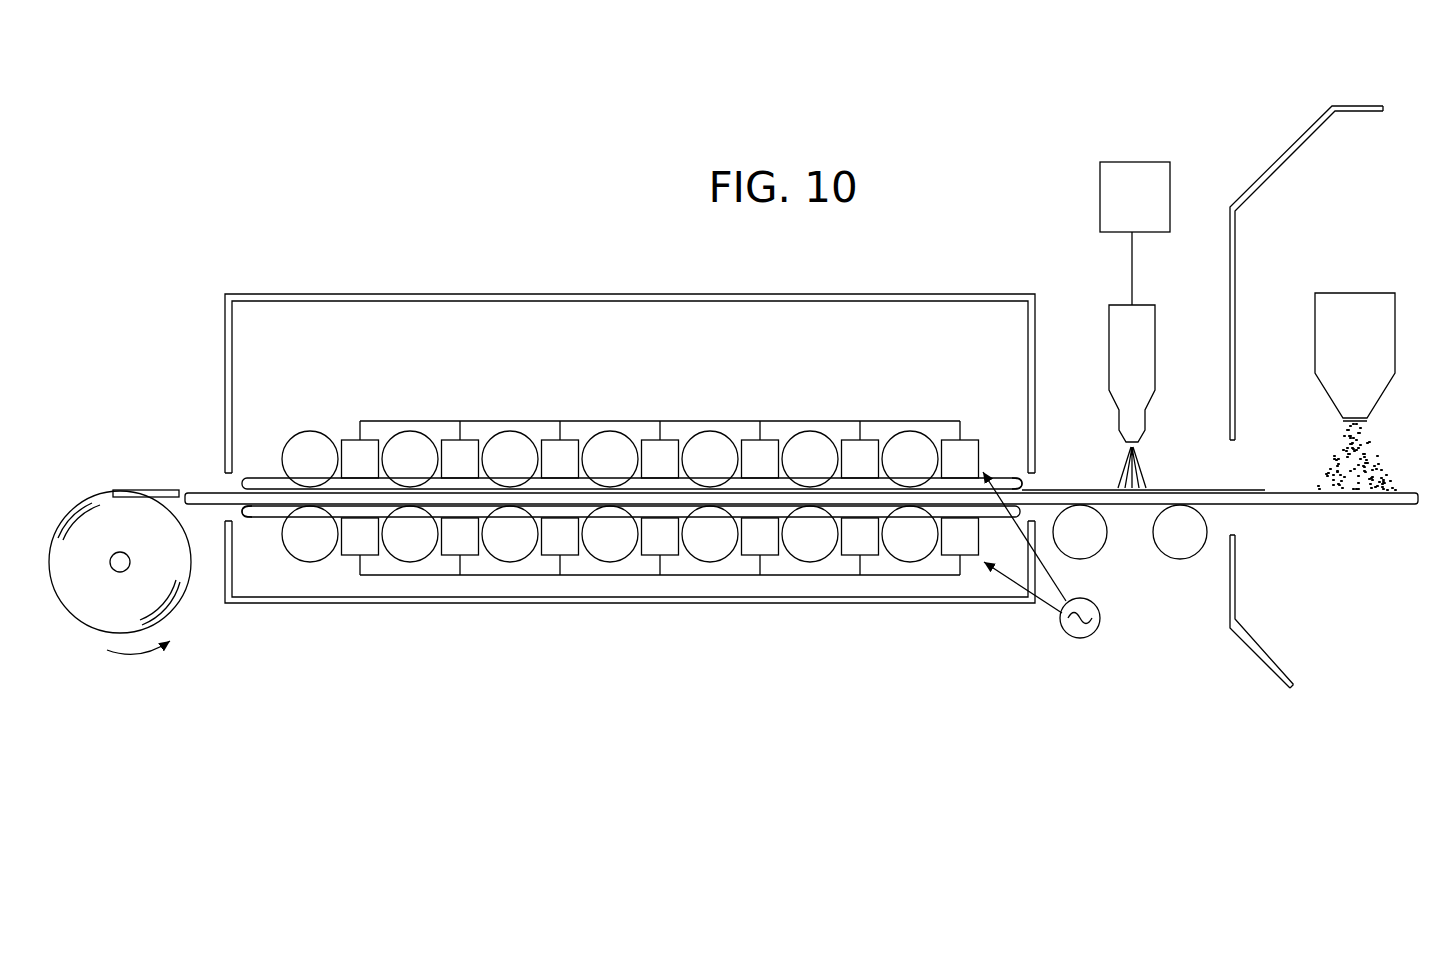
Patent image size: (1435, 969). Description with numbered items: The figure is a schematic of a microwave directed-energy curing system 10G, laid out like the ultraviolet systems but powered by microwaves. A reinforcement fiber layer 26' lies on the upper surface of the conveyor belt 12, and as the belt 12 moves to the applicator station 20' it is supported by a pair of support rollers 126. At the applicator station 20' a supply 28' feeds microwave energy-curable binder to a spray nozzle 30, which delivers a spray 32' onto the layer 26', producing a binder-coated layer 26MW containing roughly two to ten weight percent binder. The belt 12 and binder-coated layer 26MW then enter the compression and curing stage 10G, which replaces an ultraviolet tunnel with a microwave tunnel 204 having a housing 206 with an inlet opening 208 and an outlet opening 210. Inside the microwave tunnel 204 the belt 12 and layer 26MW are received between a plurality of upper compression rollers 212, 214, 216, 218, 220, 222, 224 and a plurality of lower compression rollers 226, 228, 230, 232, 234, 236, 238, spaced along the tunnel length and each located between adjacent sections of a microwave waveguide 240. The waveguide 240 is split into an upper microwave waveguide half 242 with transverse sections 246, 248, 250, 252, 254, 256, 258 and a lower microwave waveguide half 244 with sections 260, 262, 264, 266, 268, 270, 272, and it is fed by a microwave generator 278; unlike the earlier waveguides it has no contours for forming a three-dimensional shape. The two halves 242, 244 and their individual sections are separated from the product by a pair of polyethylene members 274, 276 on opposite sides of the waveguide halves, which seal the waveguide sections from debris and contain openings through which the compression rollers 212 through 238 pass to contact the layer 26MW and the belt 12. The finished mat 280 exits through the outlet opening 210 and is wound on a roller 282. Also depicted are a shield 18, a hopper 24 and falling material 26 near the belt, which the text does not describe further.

The microwave directed-energy curing system 10G is at (548, 252).
The conveyor belt 12 is at (1262, 505).
The shield 18 is at (1282, 150).
The applicator station 20' is at (1068, 169).
The powder hopper 24 is at (1326, 325).
The powder 26 is at (1364, 457).
The layer 26' is at (1219, 473).
The binder-coated layer 26MW is at (1087, 485).
The supply 28' is at (1161, 233).
The spray nozzle 30 is at (1140, 342).
The spray 32' is at (1153, 467).
The support rollers 126 is at (1172, 545).
The microwave tunnel 204 is at (752, 293).
The housing 206 is at (873, 294).
The inlet opening 208 is at (1033, 483).
The outlet opening 210 is at (230, 484).
The upper compression roller 212 is at (910, 445).
The upper compression roller 214 is at (808, 444).
The upper compression roller 216 is at (708, 445).
The upper compression roller 218 is at (604, 444).
The upper compression roller 220 is at (510, 444).
The upper compression roller 222 is at (410, 444).
The upper compression roller 224 is at (306, 444).
The lower compression roller 226 is at (912, 550).
The lower compression roller 228 is at (810, 550).
The lower compression roller 230 is at (710, 550).
The lower compression roller 232 is at (610, 550).
The lower compression roller 234 is at (515, 550).
The lower compression roller 236 is at (407, 550).
The lower compression roller 238 is at (315, 549).
The microwave waveguide 240 is at (992, 393).
The upper microwave waveguide half 242 is at (983, 447).
The lower microwave waveguide half 244 is at (984, 527).
The transverse waveguide section 246 is at (959, 436).
The transverse waveguide section 248 is at (849, 436).
The transverse waveguide section 250 is at (747, 436).
The transverse waveguide section 252 is at (641, 436).
The transverse waveguide section 254 is at (555, 438).
The transverse waveguide section 256 is at (455, 438).
The transverse waveguide section 258 is at (352, 440).
The lower waveguide section 260 is at (968, 556).
The lower waveguide section 262 is at (860, 556).
The lower waveguide section 264 is at (762, 556).
The lower waveguide section 266 is at (663, 556).
The lower waveguide section 268 is at (561, 556).
The lower waveguide section 270 is at (462, 556).
The lower waveguide section 272 is at (358, 556).
The polyethylene member 274 is at (256, 479).
The polyethylene member 276 is at (270, 520).
The microwave generator 278 is at (1100, 615).
The finished mat 280 is at (222, 493).
The roller 282 is at (115, 498).